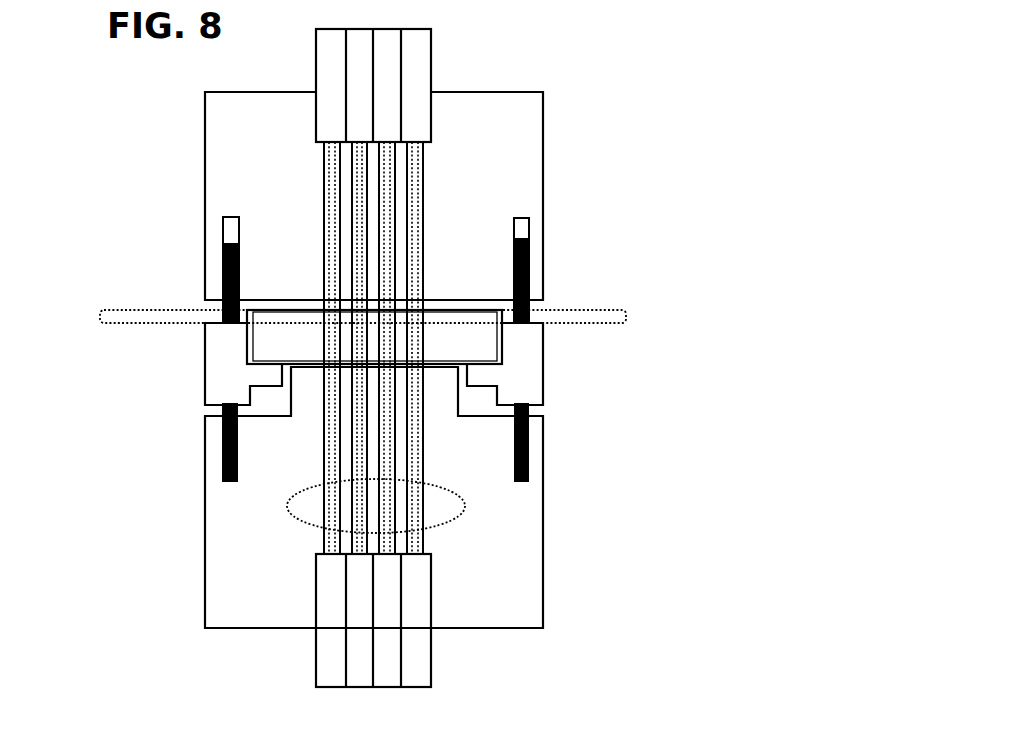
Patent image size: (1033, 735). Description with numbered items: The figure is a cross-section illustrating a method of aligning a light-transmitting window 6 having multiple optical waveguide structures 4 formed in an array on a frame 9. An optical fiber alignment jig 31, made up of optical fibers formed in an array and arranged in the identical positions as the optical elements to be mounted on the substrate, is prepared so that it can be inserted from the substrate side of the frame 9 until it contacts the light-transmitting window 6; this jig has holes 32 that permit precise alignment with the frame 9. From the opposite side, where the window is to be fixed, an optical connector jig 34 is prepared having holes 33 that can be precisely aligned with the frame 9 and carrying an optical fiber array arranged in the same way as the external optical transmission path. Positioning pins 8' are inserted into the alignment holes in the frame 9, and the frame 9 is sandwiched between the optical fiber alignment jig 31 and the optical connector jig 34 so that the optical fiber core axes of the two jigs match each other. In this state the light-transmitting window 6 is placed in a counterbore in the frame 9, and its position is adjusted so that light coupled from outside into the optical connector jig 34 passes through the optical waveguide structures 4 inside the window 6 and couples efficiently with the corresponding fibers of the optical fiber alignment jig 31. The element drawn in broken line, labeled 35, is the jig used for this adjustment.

The optical waveguide structure 4 is at (328, 340).
The light-transmitting window 6 is at (474, 350).
The positioning pins 8' is at (607, 257).
The frame 9 is at (523, 373).
The optical fiber alignment jig 31 is at (485, 585).
The holes 32 is at (223, 470).
The holes 33 is at (227, 235).
The optical connector jig 34 is at (470, 197).
The plate 35 is at (147, 315).